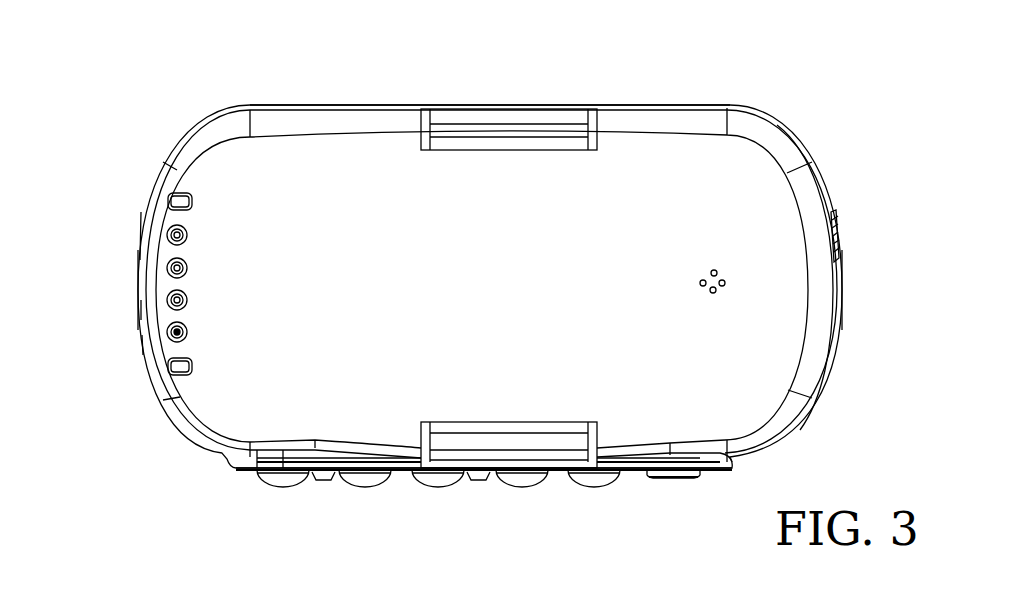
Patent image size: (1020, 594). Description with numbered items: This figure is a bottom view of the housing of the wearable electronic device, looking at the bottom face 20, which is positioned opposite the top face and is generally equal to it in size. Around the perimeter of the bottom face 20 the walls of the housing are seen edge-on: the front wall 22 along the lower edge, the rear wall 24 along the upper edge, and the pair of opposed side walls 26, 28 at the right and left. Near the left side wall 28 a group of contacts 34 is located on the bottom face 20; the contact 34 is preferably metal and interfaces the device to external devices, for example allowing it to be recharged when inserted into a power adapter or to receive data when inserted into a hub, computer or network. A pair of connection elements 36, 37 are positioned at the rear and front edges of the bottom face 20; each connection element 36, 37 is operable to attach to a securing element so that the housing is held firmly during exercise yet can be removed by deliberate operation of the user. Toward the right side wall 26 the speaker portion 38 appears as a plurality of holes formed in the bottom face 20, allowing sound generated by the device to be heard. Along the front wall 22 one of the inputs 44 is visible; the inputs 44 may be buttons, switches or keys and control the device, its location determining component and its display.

The bottom face 20 is at (709, 201).
The front wall 22 is at (255, 470).
The rear wall 24 is at (272, 108).
The side wall 26 is at (842, 284).
The side wall 28 is at (138, 284).
The contact 34 is at (175, 228).
The connection element 36 is at (533, 122).
The connection element 37 is at (487, 462).
The speaker portion 38 is at (713, 293).
The inputs 44 is at (687, 490).